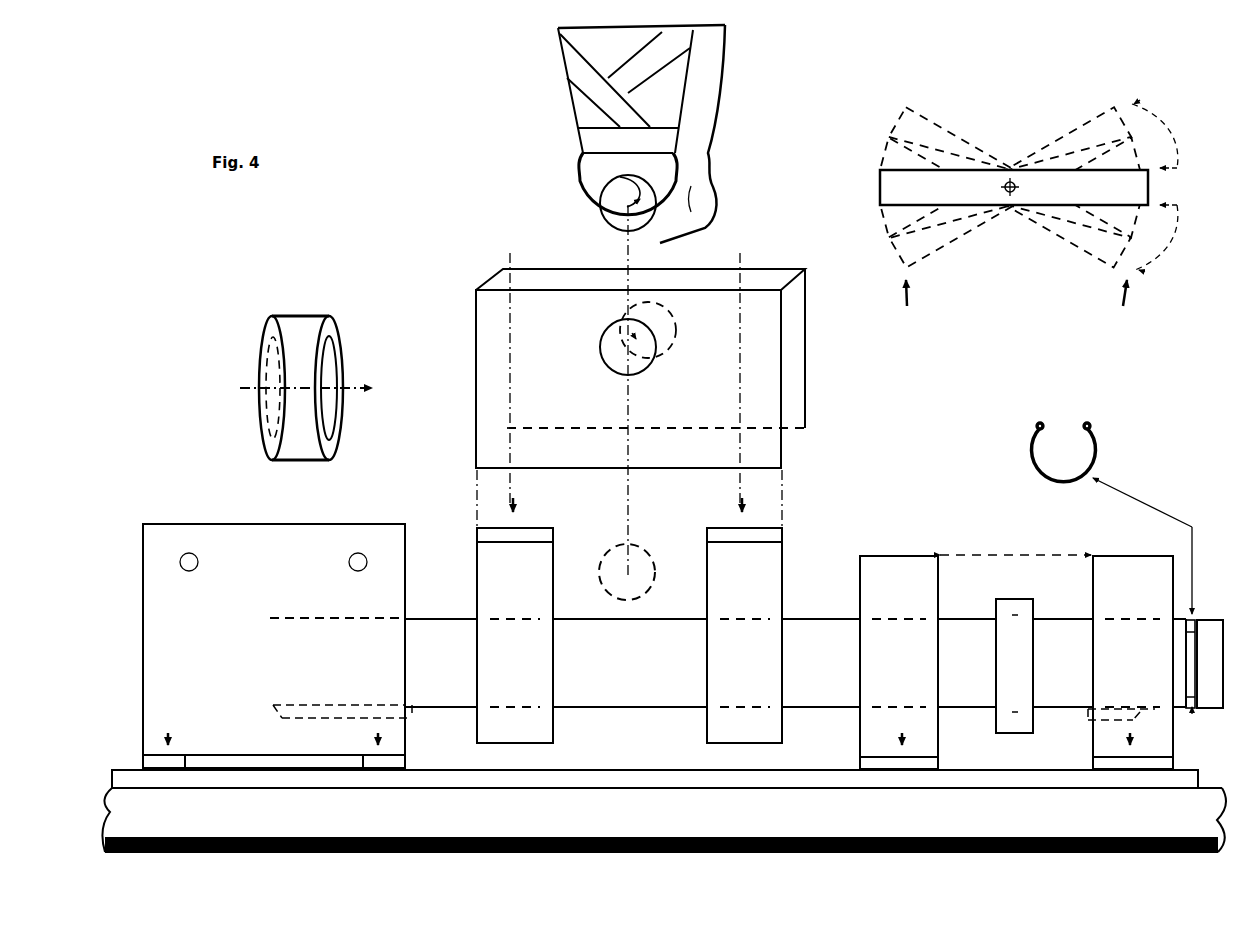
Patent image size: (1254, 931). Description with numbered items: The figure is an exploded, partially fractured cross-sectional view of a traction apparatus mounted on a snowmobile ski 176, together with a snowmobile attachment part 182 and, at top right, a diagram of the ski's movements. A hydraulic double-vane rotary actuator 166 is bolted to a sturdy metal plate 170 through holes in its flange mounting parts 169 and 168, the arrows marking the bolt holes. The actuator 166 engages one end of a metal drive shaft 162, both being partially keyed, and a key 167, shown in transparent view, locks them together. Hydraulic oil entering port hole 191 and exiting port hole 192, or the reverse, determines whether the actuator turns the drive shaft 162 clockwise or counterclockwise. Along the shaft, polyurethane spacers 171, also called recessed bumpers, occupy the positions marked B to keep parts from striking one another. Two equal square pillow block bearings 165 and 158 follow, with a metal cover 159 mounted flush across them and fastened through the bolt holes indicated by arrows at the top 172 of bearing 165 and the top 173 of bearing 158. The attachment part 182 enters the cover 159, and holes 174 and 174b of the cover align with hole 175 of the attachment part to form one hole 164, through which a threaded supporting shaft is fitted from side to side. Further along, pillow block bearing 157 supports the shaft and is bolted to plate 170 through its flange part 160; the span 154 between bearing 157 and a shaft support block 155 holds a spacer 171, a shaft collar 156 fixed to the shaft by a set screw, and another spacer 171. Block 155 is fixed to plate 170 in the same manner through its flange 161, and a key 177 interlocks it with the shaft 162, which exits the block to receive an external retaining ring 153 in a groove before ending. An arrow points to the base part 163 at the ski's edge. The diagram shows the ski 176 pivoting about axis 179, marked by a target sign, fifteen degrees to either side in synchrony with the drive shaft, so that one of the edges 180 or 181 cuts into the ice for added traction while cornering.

The external retaining ring 153 is at (1097, 455).
The spacing 154 is at (1017, 552).
The shaft support block 155 is at (1120, 560).
The shaft collar 156 is at (1012, 603).
The pillow block bearing 157 is at (860, 600).
The pillow block bearing 158 is at (777, 578).
The metal cover 159 is at (777, 448).
The flange part 160 is at (860, 768).
The mounting plate 161 is at (1093, 768).
The drive shaft 162 is at (795, 663).
The base part 163 is at (516, 838).
The hole 164 is at (654, 580).
The pillow block bearing 165 is at (548, 598).
The hydraulic double-vane rotary actuator 166 is at (403, 568).
The key 167 is at (338, 705).
The flange mounting part 168 is at (400, 758).
The flange mounting part 169 is at (183, 762).
The metal plate 170 is at (128, 770).
The polyurethane spacer 171 is at (318, 322).
The top of pillow block bearing 172 is at (478, 534).
The top of pillow block bearing 173 is at (708, 536).
The hole 174 is at (645, 360).
The hole 174b is at (664, 318).
The hole 175 is at (608, 193).
The snowmobile ski 176 is at (885, 188).
The key 177 is at (1088, 712).
The axis 179 is at (1016, 189).
The ski edge 180 is at (910, 301).
The ski edge 181 is at (1122, 301).
The snowmobile attachment part 182 is at (708, 95).
The port hole 191 is at (194, 571).
The port hole 192 is at (349, 562).